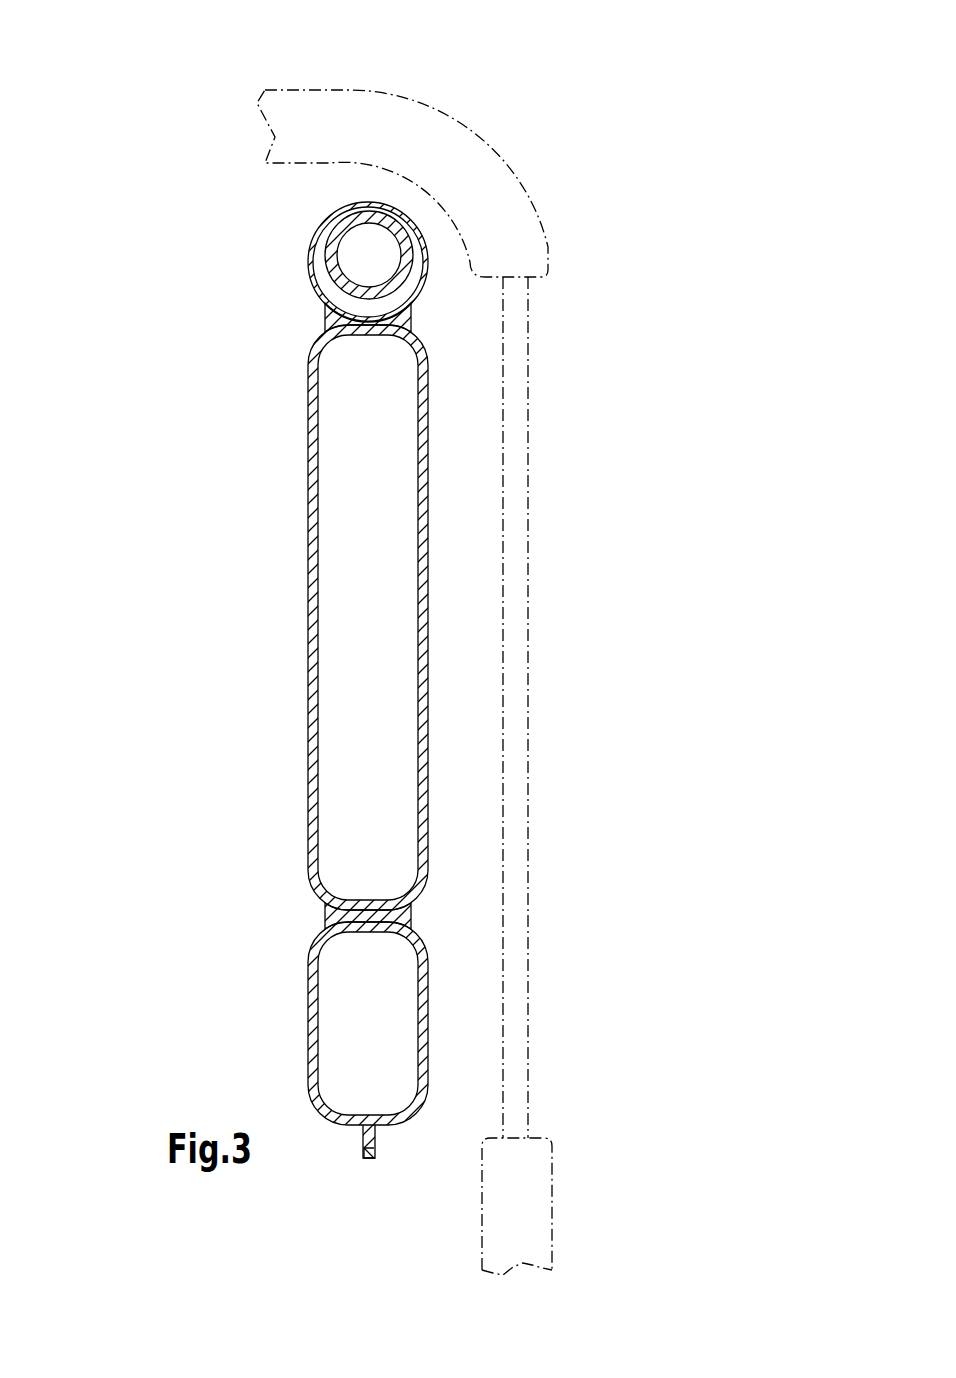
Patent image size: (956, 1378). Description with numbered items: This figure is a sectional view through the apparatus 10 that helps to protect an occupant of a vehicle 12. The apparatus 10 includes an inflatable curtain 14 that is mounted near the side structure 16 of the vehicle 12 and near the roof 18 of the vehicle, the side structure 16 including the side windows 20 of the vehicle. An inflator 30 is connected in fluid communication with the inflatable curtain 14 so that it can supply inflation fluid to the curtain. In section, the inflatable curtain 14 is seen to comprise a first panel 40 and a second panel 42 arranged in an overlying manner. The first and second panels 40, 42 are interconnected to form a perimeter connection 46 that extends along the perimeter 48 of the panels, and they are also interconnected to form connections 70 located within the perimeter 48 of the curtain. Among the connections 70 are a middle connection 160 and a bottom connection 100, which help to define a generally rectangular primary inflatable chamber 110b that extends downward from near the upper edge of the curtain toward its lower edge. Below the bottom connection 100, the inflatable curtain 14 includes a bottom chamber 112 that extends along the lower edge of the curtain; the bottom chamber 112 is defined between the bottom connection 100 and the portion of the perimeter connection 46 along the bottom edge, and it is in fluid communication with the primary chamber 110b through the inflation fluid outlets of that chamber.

The apparatus 10 is at (246, 721).
The vehicle 12 is at (457, 640).
The inflatable curtain 14 is at (323, 617).
The side structure 16 is at (525, 252).
The roof 18 is at (338, 130).
The side windows 20 is at (520, 906).
The inflator 30 is at (340, 267).
The first panel 40 is at (418, 457).
The second panel 42 is at (308, 572).
The perimeter connection 46 is at (362, 1140).
The perimeter 48 is at (373, 1158).
The connections 70 is at (303, 619).
The bottom connection 100 is at (333, 915).
The middle connection 160 is at (338, 318).
The primary inflatable chamber 110b is at (350, 673).
The bottom chamber 112 is at (360, 1034).